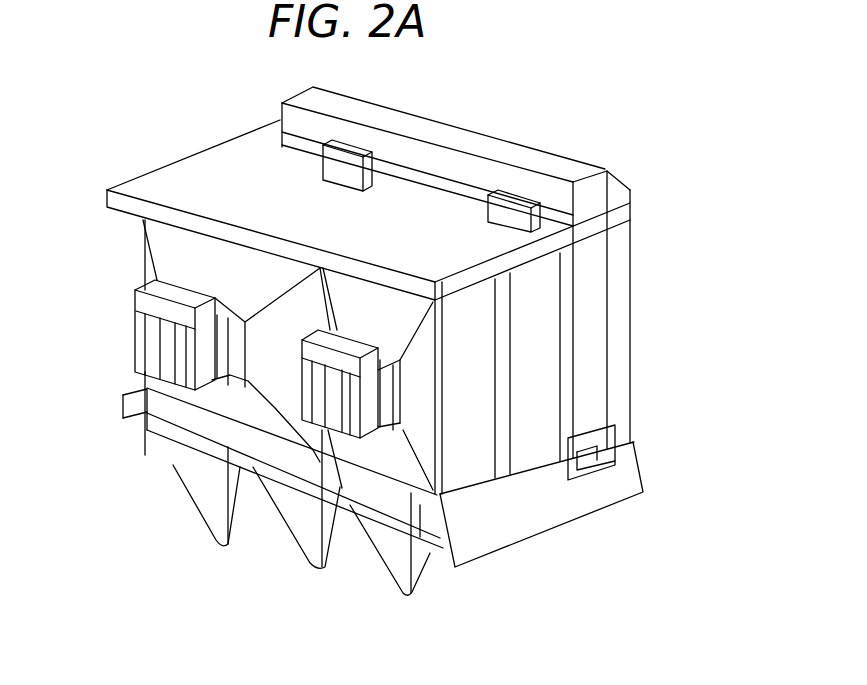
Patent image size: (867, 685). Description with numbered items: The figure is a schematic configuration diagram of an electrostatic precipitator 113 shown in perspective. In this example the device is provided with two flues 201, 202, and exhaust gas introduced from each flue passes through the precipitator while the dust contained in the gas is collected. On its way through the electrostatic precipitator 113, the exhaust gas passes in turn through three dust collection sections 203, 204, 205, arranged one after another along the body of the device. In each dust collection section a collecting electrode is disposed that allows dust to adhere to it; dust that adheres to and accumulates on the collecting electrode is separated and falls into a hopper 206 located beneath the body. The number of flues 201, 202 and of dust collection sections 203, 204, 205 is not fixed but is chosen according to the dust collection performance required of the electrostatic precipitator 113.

The electrostatic precipitator 113 is at (219, 108).
The flue 201 is at (150, 342).
The flue 202 is at (310, 404).
The dust collection section 203 is at (470, 455).
The dust collection section 204 is at (537, 433).
The dust collection section 205 is at (600, 320).
The hopper 206 is at (193, 503).